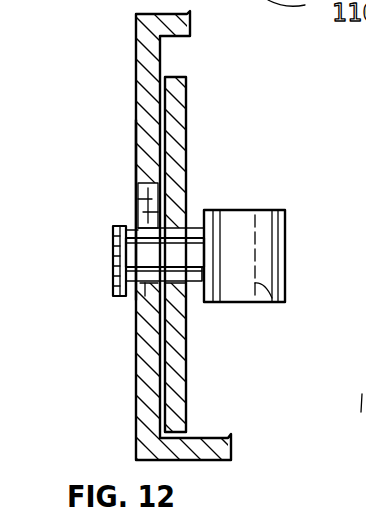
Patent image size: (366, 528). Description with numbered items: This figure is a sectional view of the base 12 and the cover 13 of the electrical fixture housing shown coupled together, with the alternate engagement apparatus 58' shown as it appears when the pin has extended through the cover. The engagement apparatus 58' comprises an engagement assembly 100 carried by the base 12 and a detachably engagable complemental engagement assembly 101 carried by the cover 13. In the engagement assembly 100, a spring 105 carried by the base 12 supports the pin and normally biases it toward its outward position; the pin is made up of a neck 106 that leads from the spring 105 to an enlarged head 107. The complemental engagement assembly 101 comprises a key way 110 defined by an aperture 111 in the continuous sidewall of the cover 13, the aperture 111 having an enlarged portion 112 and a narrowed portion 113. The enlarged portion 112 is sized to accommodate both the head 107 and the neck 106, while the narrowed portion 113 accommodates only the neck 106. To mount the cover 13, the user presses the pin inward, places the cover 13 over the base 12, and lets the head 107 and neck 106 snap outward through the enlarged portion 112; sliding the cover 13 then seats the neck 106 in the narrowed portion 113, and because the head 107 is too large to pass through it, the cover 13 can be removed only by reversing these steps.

The base 12 is at (188, 94).
The cover 13 is at (166, 56).
The engagement apparatus 58' is at (258, 152).
The engagement assembly 100 is at (302, 236).
The complemental engagement assembly 101 is at (108, 172).
The spring 105 is at (272, 298).
The neck 106 is at (189, 285).
The enlarged head 107 is at (118, 262).
The key way 110 is at (158, 190).
The aperture 111 is at (140, 213).
The enlarged portion 112 is at (133, 295).
The narrowed portion 113 is at (137, 200).